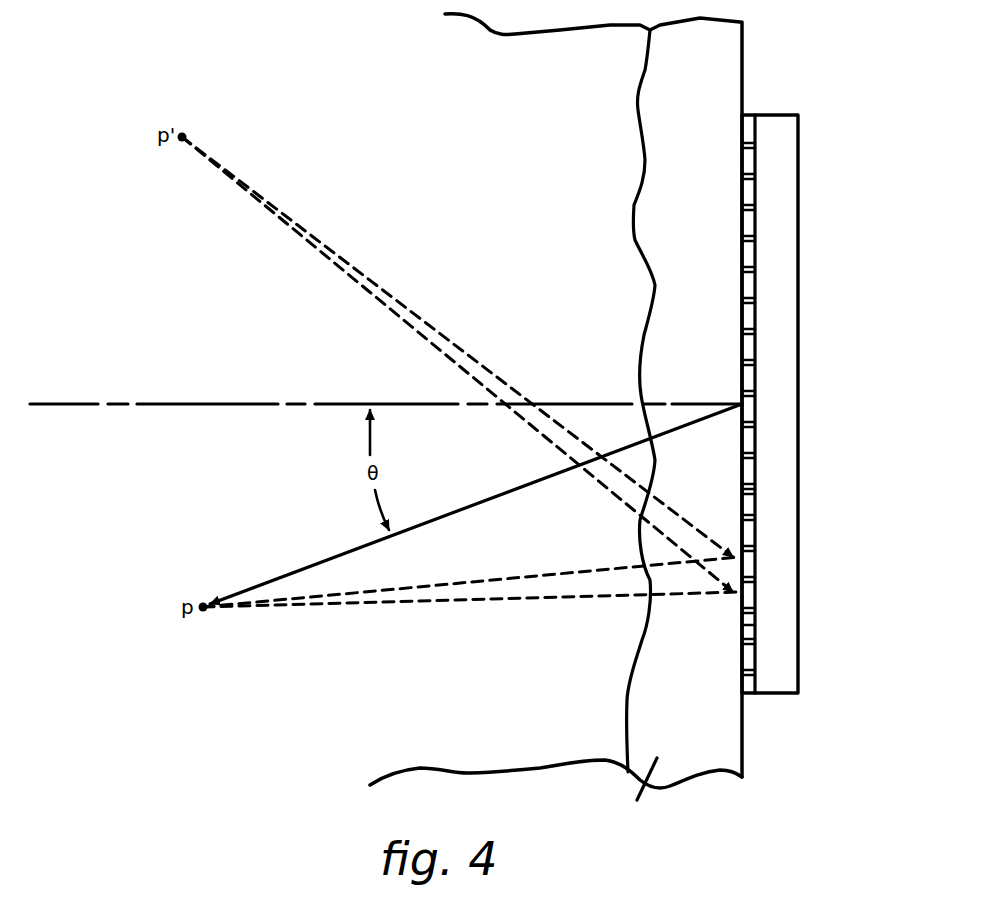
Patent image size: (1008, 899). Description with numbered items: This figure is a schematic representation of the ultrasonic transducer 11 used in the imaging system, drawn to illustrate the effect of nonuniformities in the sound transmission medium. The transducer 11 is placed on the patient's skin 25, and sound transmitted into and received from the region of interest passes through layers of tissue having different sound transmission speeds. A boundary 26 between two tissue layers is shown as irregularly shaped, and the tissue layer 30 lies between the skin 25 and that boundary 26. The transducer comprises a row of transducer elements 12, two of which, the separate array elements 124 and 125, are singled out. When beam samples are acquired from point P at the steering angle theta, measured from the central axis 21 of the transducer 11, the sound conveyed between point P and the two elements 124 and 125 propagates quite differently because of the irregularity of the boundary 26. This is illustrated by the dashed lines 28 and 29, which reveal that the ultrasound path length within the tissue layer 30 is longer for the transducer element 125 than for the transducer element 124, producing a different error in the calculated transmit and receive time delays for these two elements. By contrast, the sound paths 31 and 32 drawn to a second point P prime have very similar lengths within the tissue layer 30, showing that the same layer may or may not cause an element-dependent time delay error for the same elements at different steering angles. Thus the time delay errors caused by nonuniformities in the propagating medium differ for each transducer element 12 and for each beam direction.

The ultrasonic transducer 11 is at (810, 436).
The transducer elements 12 is at (742, 158).
The transducer element 12 sub 4 124 is at (742, 625).
The transducer element 12 sub 5 125 is at (753, 494).
The central axis 21 is at (172, 404).
The patient's skin 25 is at (742, 738).
The boundary 26 is at (640, 640).
The dashed line 28 is at (513, 600).
The dashed line 29 is at (540, 577).
The tissue layer 30 is at (638, 781).
The sound path 31 is at (403, 316).
The sound path 32 is at (460, 347).